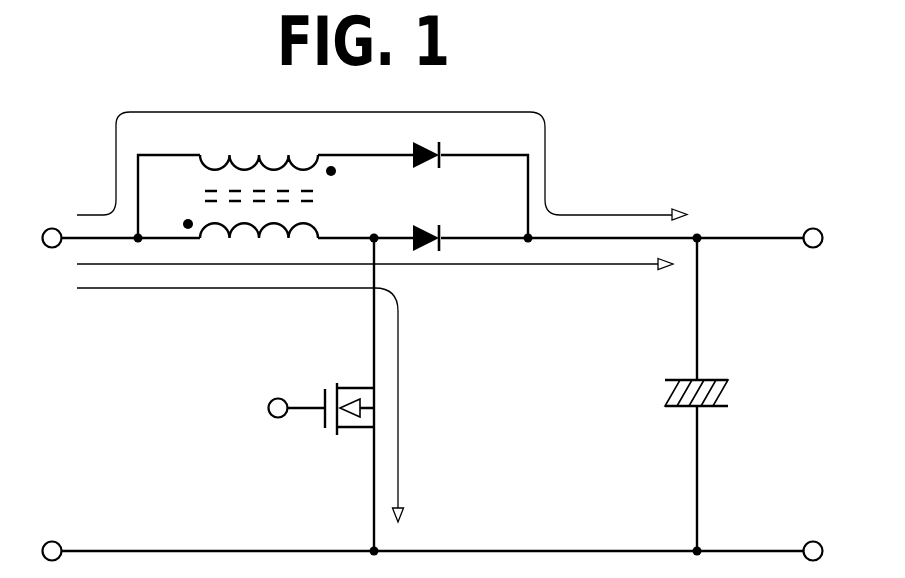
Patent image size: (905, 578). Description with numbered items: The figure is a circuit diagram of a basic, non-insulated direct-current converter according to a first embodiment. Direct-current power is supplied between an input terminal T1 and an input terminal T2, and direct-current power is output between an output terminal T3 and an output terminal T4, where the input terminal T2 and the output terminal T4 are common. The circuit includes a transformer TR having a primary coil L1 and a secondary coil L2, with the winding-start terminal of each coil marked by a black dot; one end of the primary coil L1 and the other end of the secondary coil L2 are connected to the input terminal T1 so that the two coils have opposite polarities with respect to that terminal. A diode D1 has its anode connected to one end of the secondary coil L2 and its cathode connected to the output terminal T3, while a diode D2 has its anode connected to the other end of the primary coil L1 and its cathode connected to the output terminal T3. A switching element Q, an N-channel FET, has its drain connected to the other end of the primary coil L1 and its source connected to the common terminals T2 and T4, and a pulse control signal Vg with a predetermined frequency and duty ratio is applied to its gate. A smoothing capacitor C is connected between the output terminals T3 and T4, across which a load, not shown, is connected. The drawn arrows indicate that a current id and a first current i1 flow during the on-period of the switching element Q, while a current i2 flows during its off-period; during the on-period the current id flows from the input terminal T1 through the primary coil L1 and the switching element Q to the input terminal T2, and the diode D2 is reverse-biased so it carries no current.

The input terminal T1 is at (36, 239).
The input terminal T2 is at (36, 552).
The output terminal T3 is at (834, 239).
The output terminal T4 is at (834, 552).
The primary coil L1 is at (250, 243).
The secondary coil L2 is at (268, 152).
The transformer TR is at (239, 192).
The diode D1 is at (428, 170).
The diode D2 is at (428, 262).
The switching element Q is at (349, 392).
The control signal Vg is at (280, 408).
The smoothing capacitor C is at (715, 392).
The first current i1 is at (382, 166).
The current i2 is at (375, 281).
The current id is at (277, 405).